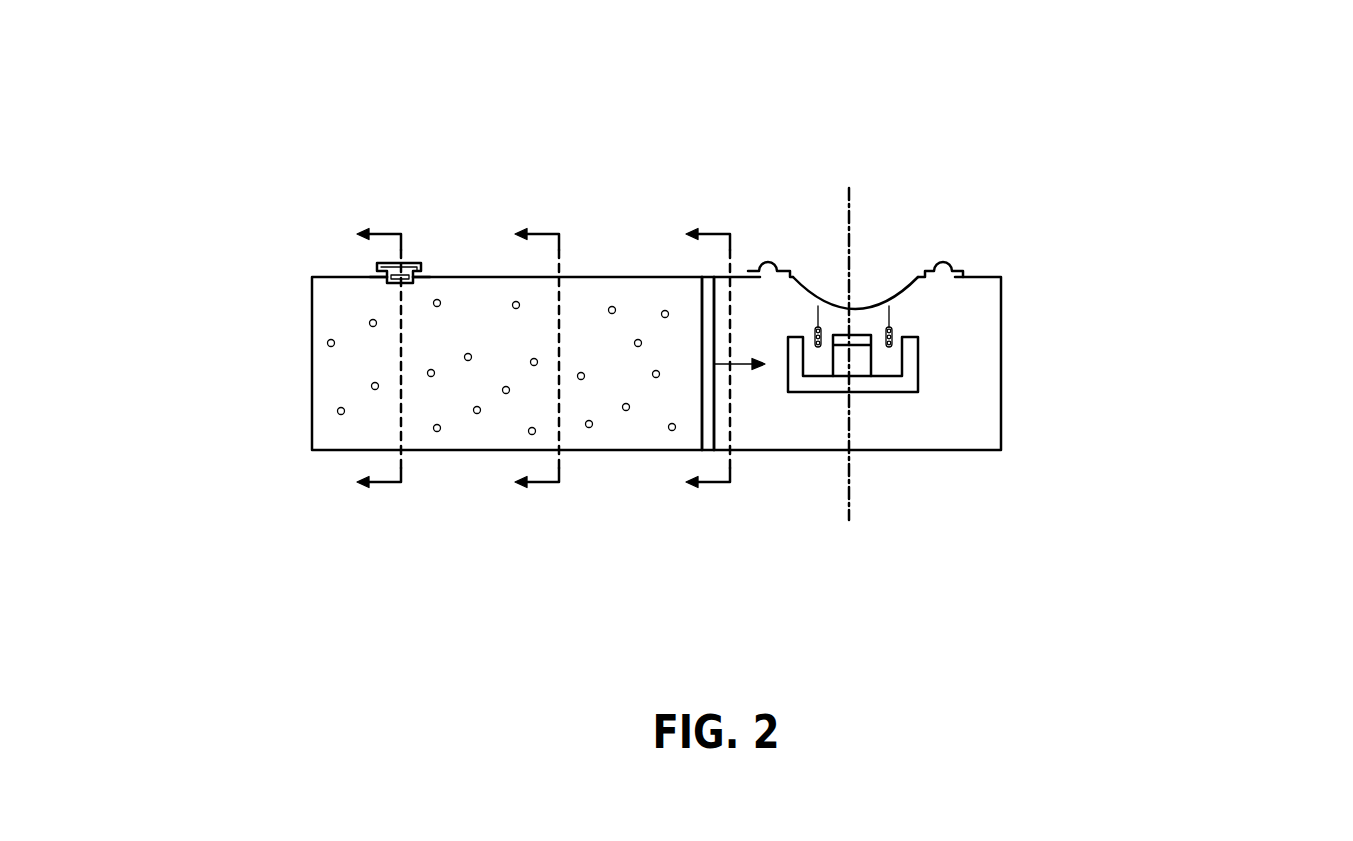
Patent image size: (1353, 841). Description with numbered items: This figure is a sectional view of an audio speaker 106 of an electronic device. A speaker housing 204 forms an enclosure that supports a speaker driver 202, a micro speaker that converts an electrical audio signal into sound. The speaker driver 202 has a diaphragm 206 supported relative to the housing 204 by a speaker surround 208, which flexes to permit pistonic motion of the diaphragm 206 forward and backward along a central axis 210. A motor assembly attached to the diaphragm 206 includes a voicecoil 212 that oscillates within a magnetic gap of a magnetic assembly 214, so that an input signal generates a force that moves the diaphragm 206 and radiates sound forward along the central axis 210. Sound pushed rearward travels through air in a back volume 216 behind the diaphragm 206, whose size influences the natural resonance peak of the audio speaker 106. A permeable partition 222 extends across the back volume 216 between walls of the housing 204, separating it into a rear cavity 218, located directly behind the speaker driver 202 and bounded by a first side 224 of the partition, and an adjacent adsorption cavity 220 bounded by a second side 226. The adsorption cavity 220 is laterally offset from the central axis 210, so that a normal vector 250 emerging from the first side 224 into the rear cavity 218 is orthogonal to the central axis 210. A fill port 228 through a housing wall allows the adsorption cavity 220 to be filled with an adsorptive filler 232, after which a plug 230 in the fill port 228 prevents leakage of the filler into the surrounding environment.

The audio speaker 106 is at (965, 102).
The speaker driver 202 is at (950, 328).
The speaker housing 204 is at (1001, 377).
The diaphragm 206 is at (866, 303).
The speaker surround 208 is at (950, 266).
The central axis 210 is at (851, 510).
The voicecoil 212 is at (893, 330).
The magnetic assembly 214 is at (865, 367).
The back volume 216 is at (820, 437).
The rear cavity 218 is at (973, 425).
The adsorption cavity 220 is at (325, 313).
The permeable partition 222 is at (714, 278).
The first side 224 is at (722, 425).
The second side 226 is at (700, 306).
The fill port 228 is at (387, 281).
The plug 230 is at (407, 263).
The adsorptive filler 232 is at (407, 528).
The normal vector 250 is at (813, 277).